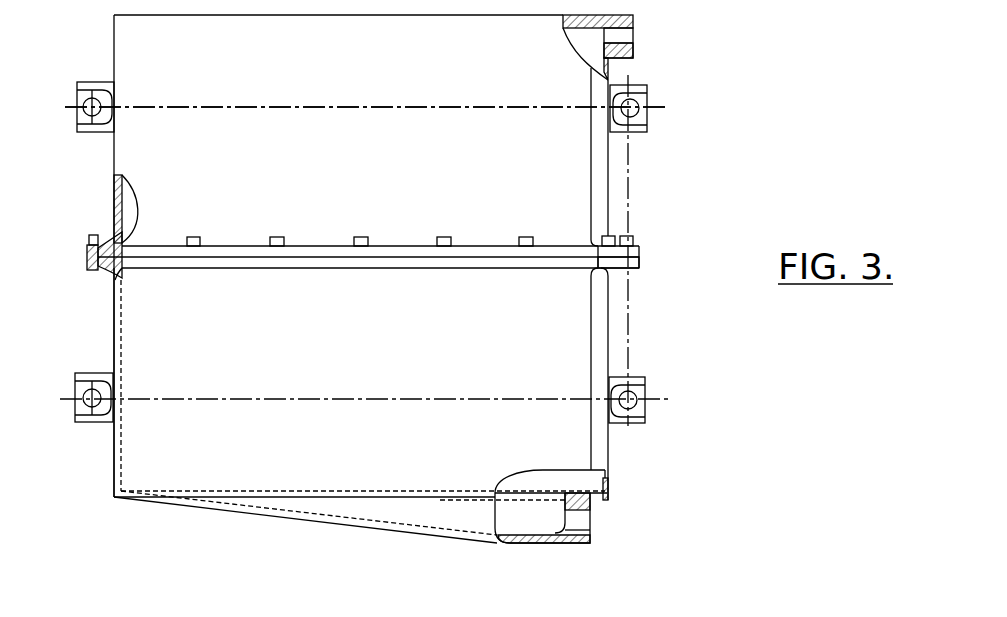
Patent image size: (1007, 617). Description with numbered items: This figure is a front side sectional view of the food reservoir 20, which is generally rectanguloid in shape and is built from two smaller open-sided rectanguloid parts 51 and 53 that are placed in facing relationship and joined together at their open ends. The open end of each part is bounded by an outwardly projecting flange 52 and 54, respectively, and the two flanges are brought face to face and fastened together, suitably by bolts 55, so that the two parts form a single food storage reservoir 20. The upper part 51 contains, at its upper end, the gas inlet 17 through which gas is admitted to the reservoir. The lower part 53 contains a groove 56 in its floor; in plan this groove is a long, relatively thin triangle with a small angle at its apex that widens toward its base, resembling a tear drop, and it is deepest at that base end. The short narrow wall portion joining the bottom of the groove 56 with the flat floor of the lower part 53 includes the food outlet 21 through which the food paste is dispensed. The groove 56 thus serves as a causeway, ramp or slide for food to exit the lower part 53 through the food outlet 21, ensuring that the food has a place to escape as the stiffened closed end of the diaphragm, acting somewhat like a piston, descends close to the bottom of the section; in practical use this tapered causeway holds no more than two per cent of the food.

The gas inlet 17 is at (633, 50).
The food reservoir 20 is at (662, 173).
The food outlet 21 is at (590, 525).
The first rectanguloid part 51 is at (114, 52).
The flange 52 is at (641, 252).
The second rectanguloid part 53 is at (113, 448).
The flange 54 is at (641, 263).
The bolts 55 is at (368, 240).
The groove 56 is at (431, 538).